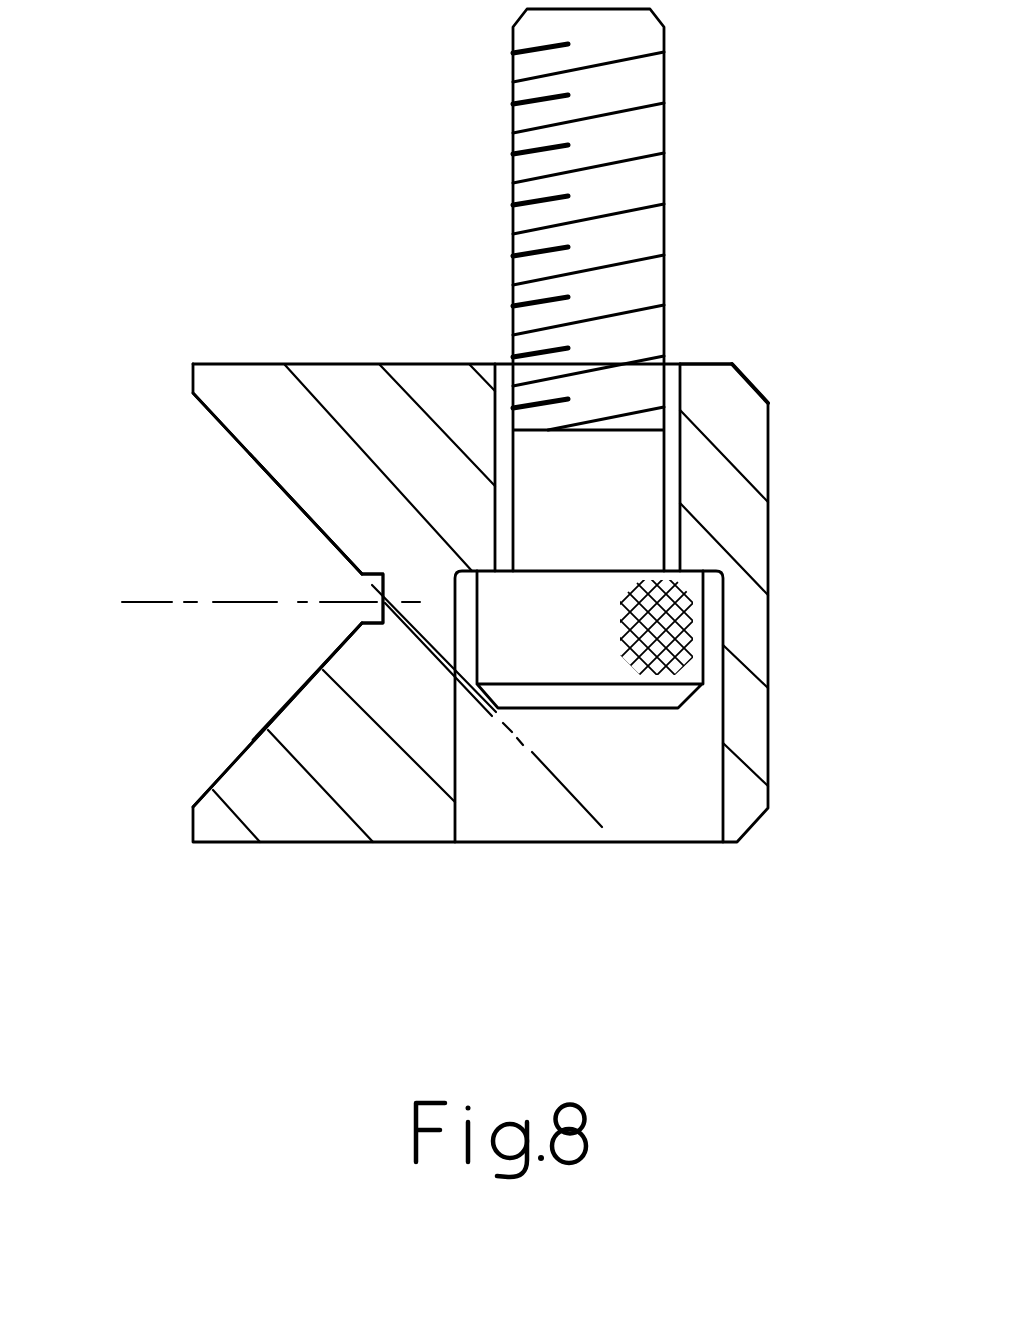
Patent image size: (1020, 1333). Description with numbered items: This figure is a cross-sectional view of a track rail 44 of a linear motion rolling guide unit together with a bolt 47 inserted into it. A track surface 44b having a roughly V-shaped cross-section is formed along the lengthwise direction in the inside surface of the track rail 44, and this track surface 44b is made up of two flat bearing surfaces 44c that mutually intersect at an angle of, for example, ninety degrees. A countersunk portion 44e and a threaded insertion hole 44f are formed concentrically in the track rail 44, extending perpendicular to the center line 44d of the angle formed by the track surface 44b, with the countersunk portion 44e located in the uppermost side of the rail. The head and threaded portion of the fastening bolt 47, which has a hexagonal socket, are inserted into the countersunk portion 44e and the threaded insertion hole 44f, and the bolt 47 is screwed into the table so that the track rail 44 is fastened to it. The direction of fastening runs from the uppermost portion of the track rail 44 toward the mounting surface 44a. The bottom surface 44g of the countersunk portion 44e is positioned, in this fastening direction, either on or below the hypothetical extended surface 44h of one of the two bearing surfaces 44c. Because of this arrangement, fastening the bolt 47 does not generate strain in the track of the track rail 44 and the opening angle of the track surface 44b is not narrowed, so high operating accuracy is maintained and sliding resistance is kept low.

The track rail 44 is at (740, 855).
The mounting surface 44a is at (402, 367).
The track surface 44b is at (317, 672).
The bearing surfaces 44c is at (243, 447).
The center line 44d is at (155, 598).
The countersunk portion 44e is at (457, 797).
The threaded insertion hole 44f is at (681, 393).
The bottom surface 44g is at (570, 571).
The hypothetical extended surface 44h is at (577, 802).
The bolt 47 is at (521, 187).